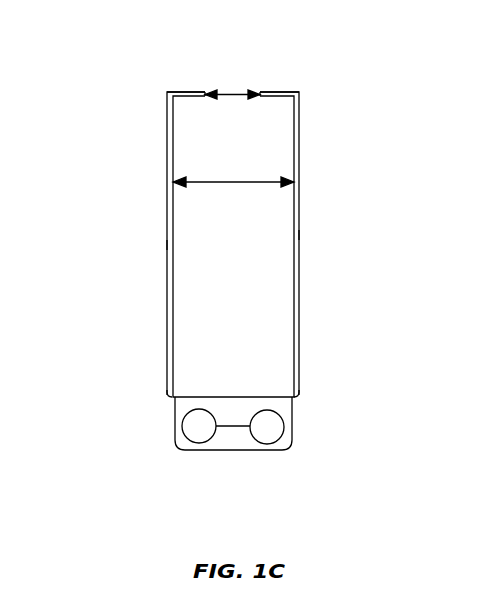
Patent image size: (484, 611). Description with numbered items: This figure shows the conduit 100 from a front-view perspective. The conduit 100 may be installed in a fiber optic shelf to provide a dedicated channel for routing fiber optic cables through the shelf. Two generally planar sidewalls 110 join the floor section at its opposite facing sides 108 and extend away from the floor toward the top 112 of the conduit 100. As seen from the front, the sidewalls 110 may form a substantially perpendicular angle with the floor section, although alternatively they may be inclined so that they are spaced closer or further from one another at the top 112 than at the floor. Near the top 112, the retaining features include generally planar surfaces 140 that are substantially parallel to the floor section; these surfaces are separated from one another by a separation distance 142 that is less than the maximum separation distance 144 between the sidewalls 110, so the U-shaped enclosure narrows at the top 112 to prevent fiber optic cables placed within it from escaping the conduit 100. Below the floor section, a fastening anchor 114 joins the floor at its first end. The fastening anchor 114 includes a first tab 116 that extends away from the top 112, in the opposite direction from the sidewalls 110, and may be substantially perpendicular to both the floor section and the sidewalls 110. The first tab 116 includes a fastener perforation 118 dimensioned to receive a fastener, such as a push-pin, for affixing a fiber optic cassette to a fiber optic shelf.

The conduit 100 is at (272, 43).
The opposite facing sides 108 is at (168, 399).
The sidewalls 110 is at (168, 245).
The top 112 is at (299, 92).
The fastening anchor 114 is at (135, 437).
The first tab 116 is at (233, 435).
The fastener perforation 118 is at (185, 445).
The generally planar surfaces 140 is at (183, 98).
The separation distance 142 is at (232, 84).
The maximum separation distance 144 is at (233, 173).